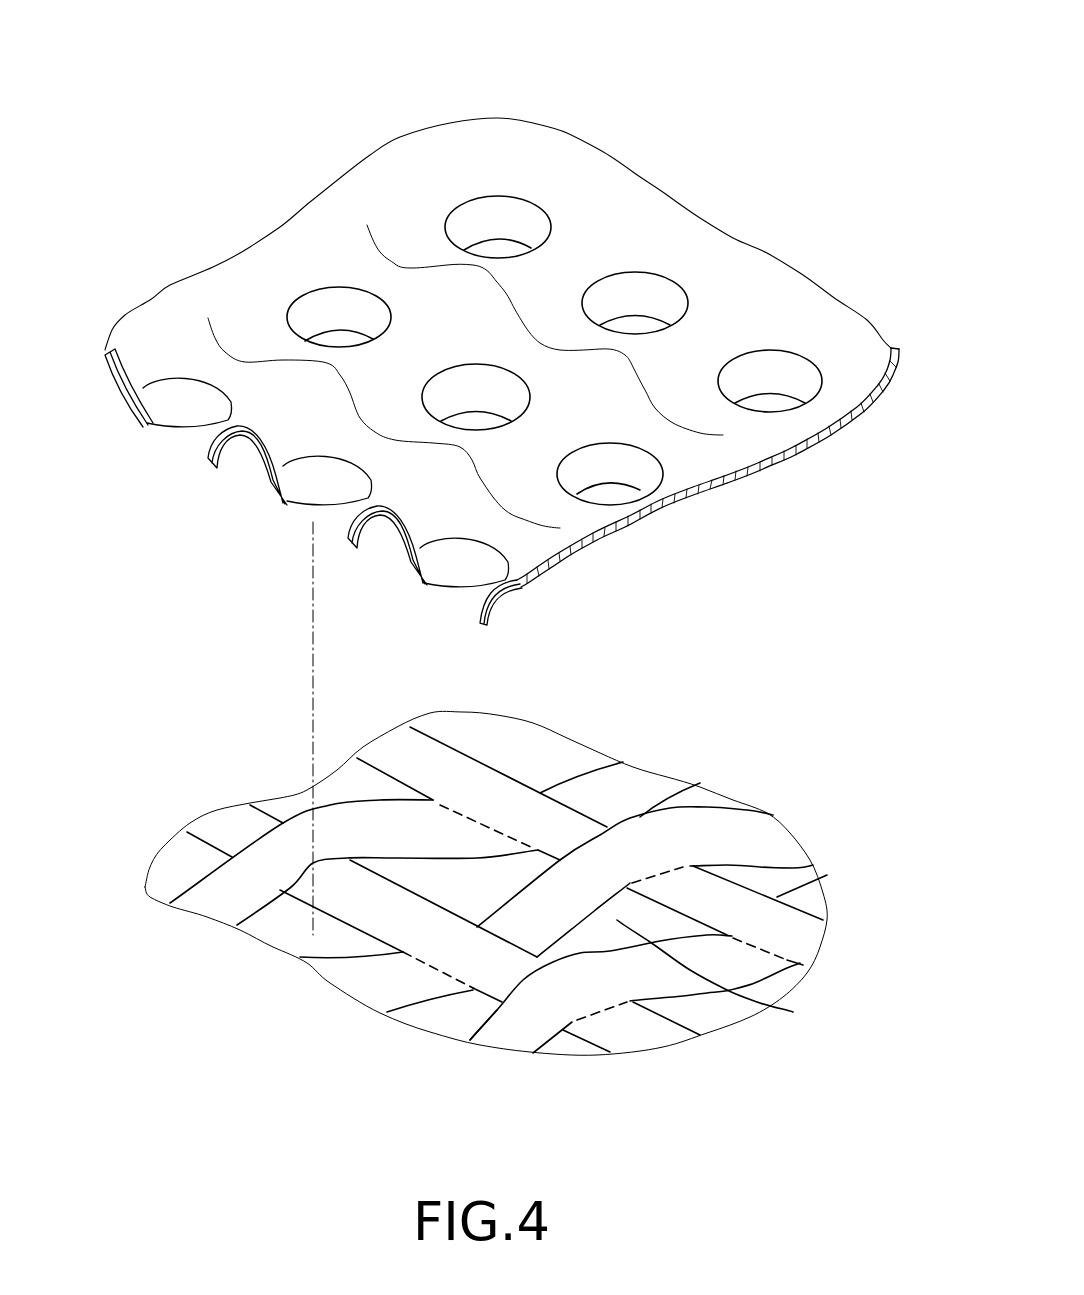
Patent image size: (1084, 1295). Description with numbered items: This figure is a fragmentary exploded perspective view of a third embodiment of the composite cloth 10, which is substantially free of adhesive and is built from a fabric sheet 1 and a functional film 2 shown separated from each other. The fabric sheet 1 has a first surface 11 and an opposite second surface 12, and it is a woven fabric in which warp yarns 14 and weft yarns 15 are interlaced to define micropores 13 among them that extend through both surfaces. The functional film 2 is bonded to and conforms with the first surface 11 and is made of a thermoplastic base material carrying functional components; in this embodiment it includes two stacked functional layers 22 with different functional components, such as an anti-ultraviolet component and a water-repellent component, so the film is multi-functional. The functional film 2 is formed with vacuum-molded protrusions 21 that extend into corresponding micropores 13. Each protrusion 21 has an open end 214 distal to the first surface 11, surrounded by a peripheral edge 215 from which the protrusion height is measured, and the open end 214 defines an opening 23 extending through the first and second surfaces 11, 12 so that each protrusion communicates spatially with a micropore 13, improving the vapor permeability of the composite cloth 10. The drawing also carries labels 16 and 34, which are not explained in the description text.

The composite cloth 10 is at (815, 47).
The functional film 2 is at (763, 244).
The vacuum-molded protrusions 21 is at (195, 378).
The functional layers 22 is at (697, 493).
The opening 23 is at (166, 428).
The open end 214 is at (768, 403).
The peripheral edge 215 is at (770, 405).
The fabric sheet 1 is at (819, 818).
The first surface 11 is at (682, 830).
The second surface 12 is at (793, 1012).
The micropores 13 is at (334, 931).
The warp yarns 14 is at (630, 1032).
The weft yarns 15 is at (513, 1032).
The gaps 16 is at (263, 890).
The yarn 34 is at (800, 935).